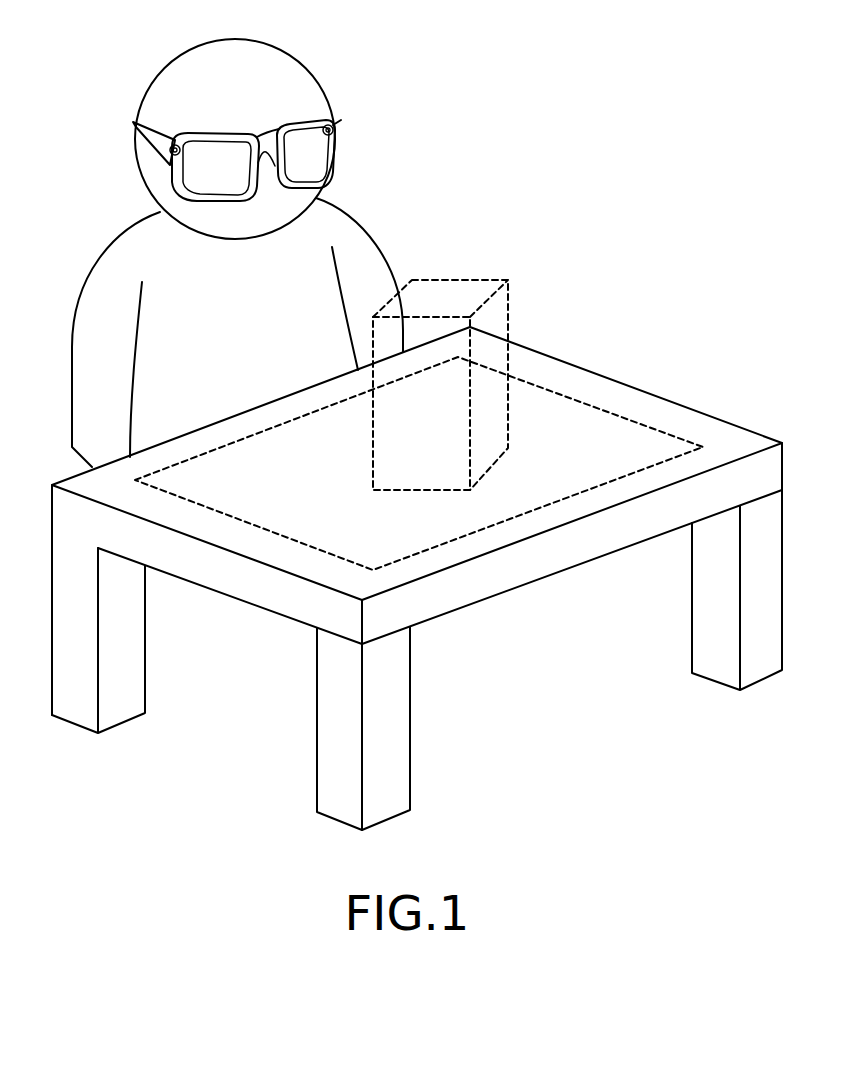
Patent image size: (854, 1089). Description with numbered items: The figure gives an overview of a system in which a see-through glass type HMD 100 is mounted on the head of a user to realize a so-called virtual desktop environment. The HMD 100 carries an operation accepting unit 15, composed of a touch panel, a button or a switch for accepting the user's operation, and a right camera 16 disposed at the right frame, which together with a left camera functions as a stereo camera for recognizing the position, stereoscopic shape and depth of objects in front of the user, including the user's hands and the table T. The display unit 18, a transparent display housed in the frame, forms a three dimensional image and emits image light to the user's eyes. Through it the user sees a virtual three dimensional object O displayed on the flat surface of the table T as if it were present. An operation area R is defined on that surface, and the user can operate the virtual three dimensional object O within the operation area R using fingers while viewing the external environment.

The HMD (Head Mount Display) 100 is at (220, 132).
The operation accepting unit 15 is at (168, 152).
The right camera 16 is at (334, 127).
The display unit 18 is at (297, 168).
The virtual three dimensional object O is at (449, 293).
The operation area R is at (580, 400).
The table T is at (712, 428).